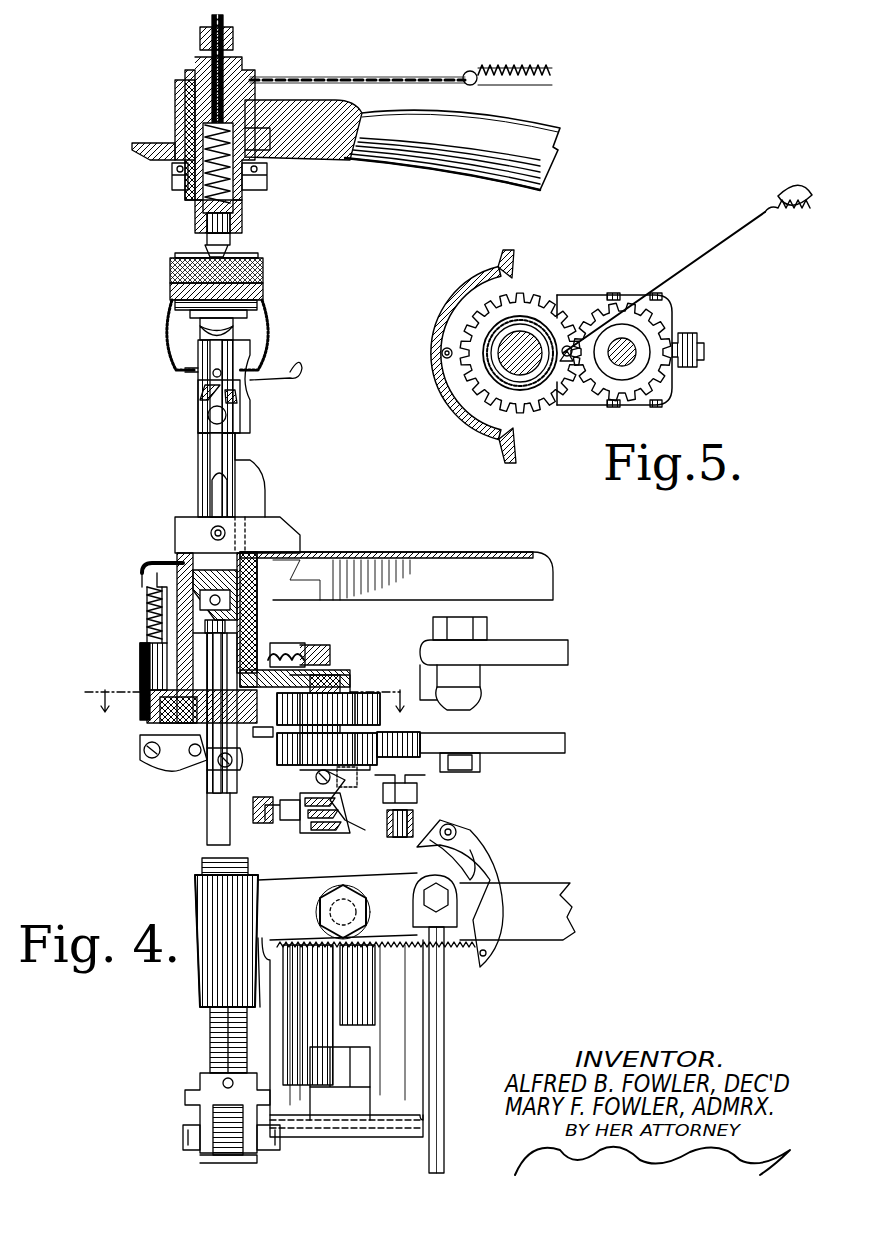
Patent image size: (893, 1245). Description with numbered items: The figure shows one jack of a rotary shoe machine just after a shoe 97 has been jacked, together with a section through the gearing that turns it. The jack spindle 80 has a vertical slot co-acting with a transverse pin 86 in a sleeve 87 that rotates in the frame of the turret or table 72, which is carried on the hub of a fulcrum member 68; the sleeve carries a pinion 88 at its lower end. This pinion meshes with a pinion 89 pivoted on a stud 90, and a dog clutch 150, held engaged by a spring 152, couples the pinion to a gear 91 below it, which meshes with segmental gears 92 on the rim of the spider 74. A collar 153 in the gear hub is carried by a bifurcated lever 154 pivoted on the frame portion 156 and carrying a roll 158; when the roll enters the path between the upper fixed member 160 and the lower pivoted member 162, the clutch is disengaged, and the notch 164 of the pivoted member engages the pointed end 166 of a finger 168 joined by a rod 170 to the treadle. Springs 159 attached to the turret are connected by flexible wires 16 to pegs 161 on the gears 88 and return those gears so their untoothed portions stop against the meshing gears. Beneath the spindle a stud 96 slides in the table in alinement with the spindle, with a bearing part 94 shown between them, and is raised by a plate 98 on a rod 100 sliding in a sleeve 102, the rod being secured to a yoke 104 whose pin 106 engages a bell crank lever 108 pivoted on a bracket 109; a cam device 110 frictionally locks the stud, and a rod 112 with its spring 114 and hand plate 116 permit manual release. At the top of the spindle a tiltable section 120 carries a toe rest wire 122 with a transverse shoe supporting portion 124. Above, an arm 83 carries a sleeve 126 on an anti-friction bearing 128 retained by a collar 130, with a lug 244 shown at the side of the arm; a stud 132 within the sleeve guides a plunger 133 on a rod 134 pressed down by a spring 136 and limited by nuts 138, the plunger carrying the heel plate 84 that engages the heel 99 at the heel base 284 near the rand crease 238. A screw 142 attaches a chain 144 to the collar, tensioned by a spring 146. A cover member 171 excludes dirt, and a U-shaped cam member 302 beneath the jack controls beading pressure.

In FIG. 5, the flexible wire 16 is at (685, 270).
In FIG. 4, the fulcrum member 68 is at (565, 658).
In FIG. 4, the turret or table 72 is at (540, 595).
In FIG. 5, the turret or table 72 is at (478, 425).
In FIG. 4, the spider 74 is at (545, 755).
In FIG. 4, the jack spindle 80 is at (205, 455).
In FIG. 4, the diverging arm 83 is at (540, 153).
In FIG. 4, the heel plate 84 is at (240, 254).
In FIG. 4, the transverse pin 86 is at (225, 532).
In FIG. 4, the sleeve 87 is at (240, 553).
In FIG. 5, the sleeve 87 is at (485, 360).
In FIG. 4, the pinion 88 is at (175, 712).
In FIG. 5, the pinion 88 is at (452, 315).
In FIG. 4, the pinion 89 is at (360, 700).
In FIG. 5, the pinion 89 is at (608, 303).
In FIG. 4, the stud 90 is at (320, 700).
In FIG. 5, the stud 90 is at (630, 335).
In FIG. 4, the gear 91 is at (320, 820).
In FIG. 4, the segmental gear 92 is at (420, 760).
In FIG. 4, the bearing 94 is at (239, 601).
In FIG. 4, the stud 96 is at (217, 755).
In FIG. 5, the stud 96 is at (527, 335).
In FIG. 4, the shoe 97 is at (270, 318).
In FIG. 4, the plate 98 is at (248, 870).
In FIG. 4, the heel 99 is at (263, 272).
In FIG. 4, the rod 100 is at (212, 1033).
In FIG. 4, the sleeve 102 is at (195, 905).
In FIG. 4, the yoke 104 is at (200, 1095).
In FIG. 4, the pin 106 is at (185, 1148).
In FIG. 4, the bell crank lever 108 is at (240, 1165).
In FIG. 4, the bracket 109 is at (400, 1020).
In FIG. 4, the cam device 110 is at (155, 760).
In FIG. 4, the rod 112 is at (148, 600).
In FIG. 4, the spring 114 is at (148, 625).
In FIG. 4, the hand plate 116 is at (175, 560).
In FIG. 4, the section 120 is at (200, 357).
In FIG. 4, the toe rest wire 122 is at (205, 388).
In FIG. 4, the transverse shoe supporting portion 124 is at (288, 365).
In FIG. 4, the sleeve 126 is at (185, 125).
In FIG. 4, the anti-friction bearing 128 is at (190, 182).
In FIG. 4, the collar 130 is at (175, 92).
In FIG. 4, the stud 132 is at (195, 217).
In FIG. 4, the plunger 133 is at (250, 225).
In FIG. 4, the rod 134 is at (172, 163).
In FIG. 4, the spring 136 is at (262, 158).
In FIG. 4, the nuts 138 is at (238, 40).
In FIG. 4, the screw 142 is at (258, 78).
In FIG. 4, the chain 144 is at (400, 75).
In FIG. 4, the spring 146 is at (522, 70).
In FIG. 4, the dog clutch 150 is at (263, 737).
In FIG. 4, the spring 152 is at (358, 825).
In FIG. 4, the collar 153 is at (350, 775).
In FIG. 4, the bifurcated lever 154 is at (298, 815).
In FIG. 5, the bifurcated lever 154 is at (588, 400).
In FIG. 4, the frame portion 156 is at (258, 805).
In FIG. 4, the roll 158 is at (415, 830).
In FIG. 5, the roll 158 is at (700, 328).
In FIG. 5, the spring 159 is at (790, 180).
In FIG. 4, the upper fixed member 160 is at (410, 795).
In FIG. 4, the peg 161 is at (290, 650).
In FIG. 5, the peg 161 is at (566, 360).
In FIG. 4, the lower pivoted member 162 is at (470, 848).
In FIG. 4, the notch 164 is at (505, 955).
In FIG. 4, the pointed end 166 is at (475, 882).
In FIG. 4, the finger 168 is at (440, 930).
In FIG. 4, the rod 170 is at (445, 1070).
In FIG. 4, the cover member 171 is at (432, 548).
In FIG. 4, the rand crease 238 is at (175, 303).
In FIG. 4, the lug 244 is at (150, 143).
In FIG. 4, the heel base portion 284 is at (170, 290).
In FIG. 4, the U-shaped cam member 302 is at (225, 850).